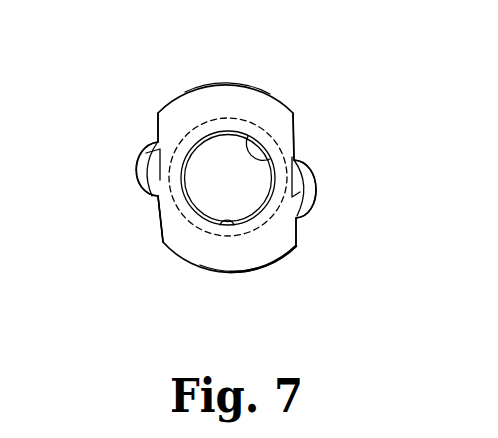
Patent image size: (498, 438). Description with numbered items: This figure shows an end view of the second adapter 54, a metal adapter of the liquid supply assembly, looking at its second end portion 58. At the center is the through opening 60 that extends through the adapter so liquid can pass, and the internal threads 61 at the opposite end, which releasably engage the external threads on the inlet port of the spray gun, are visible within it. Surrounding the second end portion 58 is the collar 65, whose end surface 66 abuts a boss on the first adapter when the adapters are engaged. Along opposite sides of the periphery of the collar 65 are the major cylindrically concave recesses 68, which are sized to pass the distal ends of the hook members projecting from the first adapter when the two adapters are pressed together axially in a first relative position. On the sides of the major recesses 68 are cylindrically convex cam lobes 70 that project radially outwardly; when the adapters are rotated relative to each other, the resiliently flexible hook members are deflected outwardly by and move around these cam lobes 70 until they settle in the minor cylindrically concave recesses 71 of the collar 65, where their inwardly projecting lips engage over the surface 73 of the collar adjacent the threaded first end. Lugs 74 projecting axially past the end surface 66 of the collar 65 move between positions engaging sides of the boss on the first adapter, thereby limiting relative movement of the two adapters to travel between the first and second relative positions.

The second adapter 54 is at (250, 276).
The second end portion 58 is at (238, 102).
The through opening 60 is at (268, 162).
The internal threads 61 is at (214, 221).
The collar 65 is at (225, 272).
The end surface 66 is at (173, 240).
The major cylindrically concave recesses 68 is at (293, 133).
The cylindrically convex cam lobes 70 is at (137, 168).
The minor cylindrically concave recesses 71 is at (157, 127).
The surface of the collar 73 is at (170, 128).
The lugs 74 is at (150, 159).